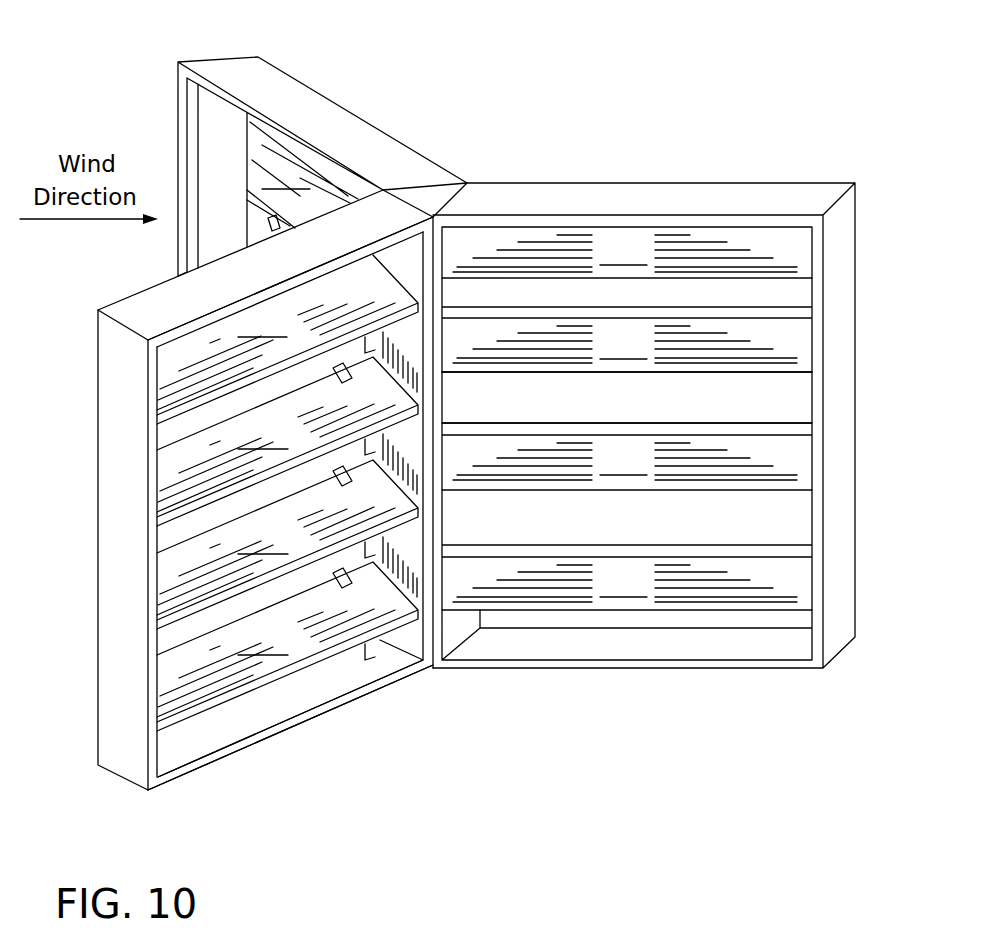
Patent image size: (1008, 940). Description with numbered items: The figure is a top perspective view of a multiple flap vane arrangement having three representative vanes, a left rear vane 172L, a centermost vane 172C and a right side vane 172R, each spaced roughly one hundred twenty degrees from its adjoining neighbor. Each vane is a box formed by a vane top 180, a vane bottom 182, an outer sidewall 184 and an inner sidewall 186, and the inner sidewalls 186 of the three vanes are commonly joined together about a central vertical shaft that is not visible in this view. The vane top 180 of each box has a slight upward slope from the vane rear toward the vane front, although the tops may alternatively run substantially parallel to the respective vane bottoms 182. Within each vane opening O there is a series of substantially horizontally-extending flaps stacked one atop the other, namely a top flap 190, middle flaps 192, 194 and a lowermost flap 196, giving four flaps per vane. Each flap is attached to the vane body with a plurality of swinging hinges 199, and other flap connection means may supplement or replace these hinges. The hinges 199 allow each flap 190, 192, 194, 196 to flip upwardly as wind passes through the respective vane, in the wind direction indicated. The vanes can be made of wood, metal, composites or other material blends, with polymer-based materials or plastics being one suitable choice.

The left rear vane 172L is at (354, 82).
The centermost vane 172C is at (292, 760).
The right side vane 172R is at (629, 167).
The vane top 180 is at (345, 129).
The vane bottom 182 is at (287, 705).
The outer sidewall 184 is at (179, 152).
The inner sidewall 186 is at (410, 258).
The top flap 190 is at (484, 273).
The middle flap 192 is at (484, 426).
The middle flap 194 is at (484, 536).
The lowermost flap 196 is at (484, 646).
The swinging hinge 199 is at (265, 222).
The vane opening O is at (182, 417).